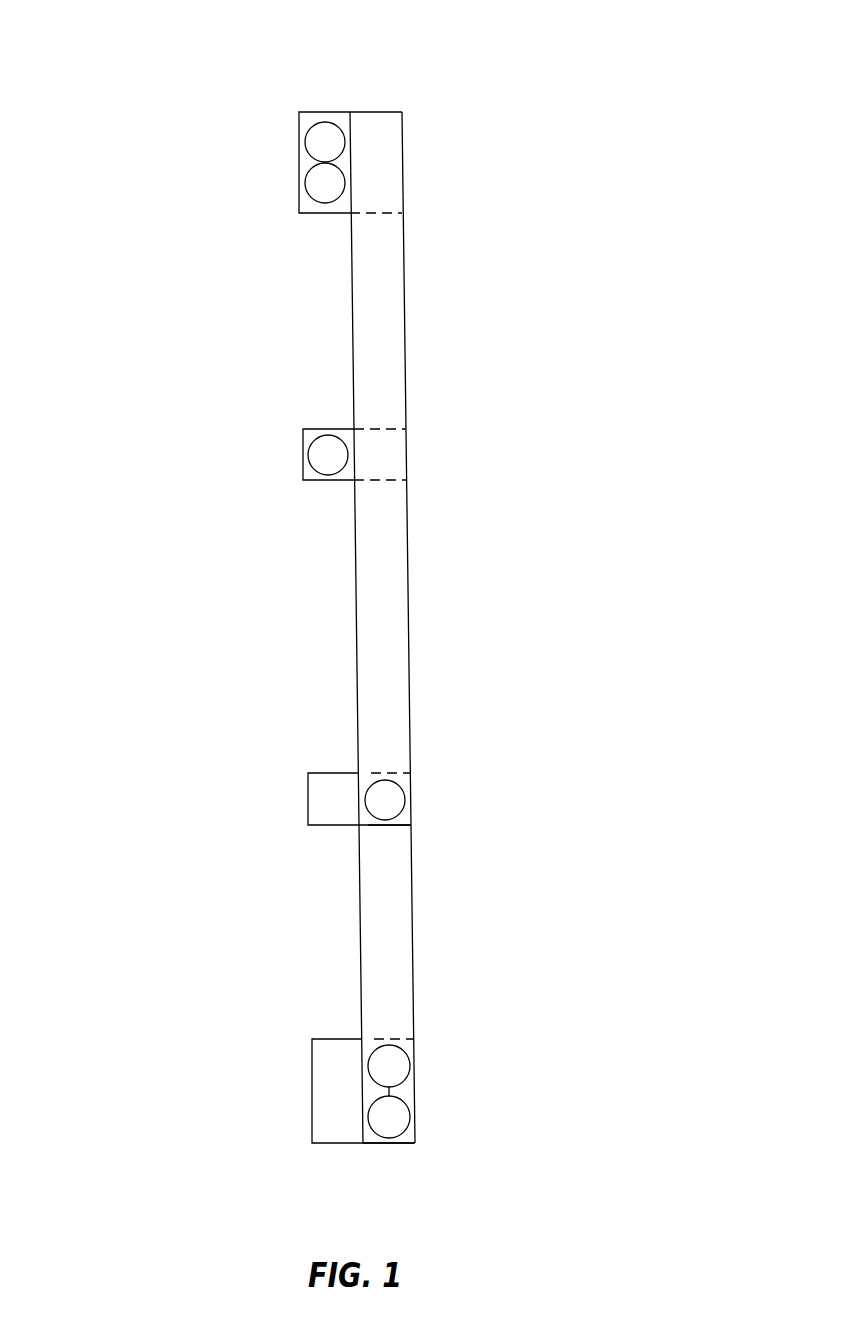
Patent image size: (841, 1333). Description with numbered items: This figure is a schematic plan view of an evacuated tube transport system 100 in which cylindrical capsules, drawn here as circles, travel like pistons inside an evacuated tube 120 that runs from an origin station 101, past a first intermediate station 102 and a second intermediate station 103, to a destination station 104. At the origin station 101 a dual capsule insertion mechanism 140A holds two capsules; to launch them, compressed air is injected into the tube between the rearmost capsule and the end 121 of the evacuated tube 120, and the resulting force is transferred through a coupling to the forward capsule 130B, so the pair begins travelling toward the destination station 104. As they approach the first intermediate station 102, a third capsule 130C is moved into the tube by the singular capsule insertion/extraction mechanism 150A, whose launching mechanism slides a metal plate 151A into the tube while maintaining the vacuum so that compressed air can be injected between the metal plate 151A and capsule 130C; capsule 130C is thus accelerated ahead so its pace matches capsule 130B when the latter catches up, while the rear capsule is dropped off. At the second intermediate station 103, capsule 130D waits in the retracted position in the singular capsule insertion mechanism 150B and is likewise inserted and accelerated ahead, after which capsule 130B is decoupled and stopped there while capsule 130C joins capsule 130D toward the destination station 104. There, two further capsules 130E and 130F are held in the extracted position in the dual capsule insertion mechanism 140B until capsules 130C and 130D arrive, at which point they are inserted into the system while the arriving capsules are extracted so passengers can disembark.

The evacuated tube transport system 100 is at (641, 62).
The origin station 101 is at (152, 1090).
The first intermediate station 102 is at (147, 798).
The second intermediate station 103 is at (140, 452).
The destination station 104 is at (135, 160).
The evacuated tube 120 is at (408, 600).
The end of the evacuated tube 121 is at (392, 1143).
The capsule 130B is at (406, 1052).
The capsule 130C is at (402, 786).
The capsule 130D is at (312, 440).
The capsule 130E is at (309, 169).
The capsule 130F is at (309, 128).
The dual capsule insertion mechanism 140A is at (338, 1039).
The dual capsule insertion mechanism 140B is at (324, 112).
The singular capsule insertion/extraction mechanism 150A is at (333, 773).
The singular capsule insertion mechanism 150B is at (326, 429).
The metal plate 151A is at (395, 826).